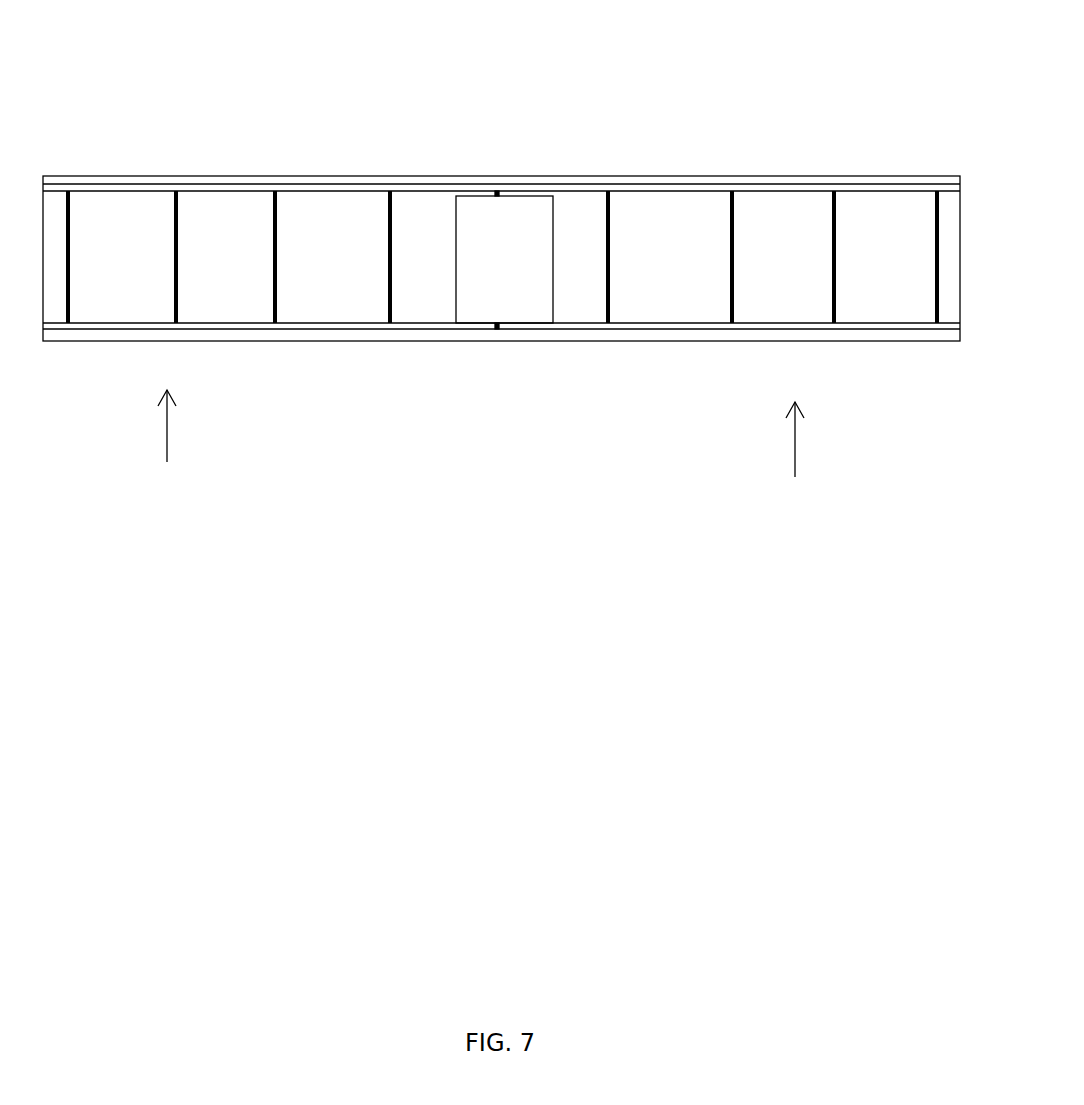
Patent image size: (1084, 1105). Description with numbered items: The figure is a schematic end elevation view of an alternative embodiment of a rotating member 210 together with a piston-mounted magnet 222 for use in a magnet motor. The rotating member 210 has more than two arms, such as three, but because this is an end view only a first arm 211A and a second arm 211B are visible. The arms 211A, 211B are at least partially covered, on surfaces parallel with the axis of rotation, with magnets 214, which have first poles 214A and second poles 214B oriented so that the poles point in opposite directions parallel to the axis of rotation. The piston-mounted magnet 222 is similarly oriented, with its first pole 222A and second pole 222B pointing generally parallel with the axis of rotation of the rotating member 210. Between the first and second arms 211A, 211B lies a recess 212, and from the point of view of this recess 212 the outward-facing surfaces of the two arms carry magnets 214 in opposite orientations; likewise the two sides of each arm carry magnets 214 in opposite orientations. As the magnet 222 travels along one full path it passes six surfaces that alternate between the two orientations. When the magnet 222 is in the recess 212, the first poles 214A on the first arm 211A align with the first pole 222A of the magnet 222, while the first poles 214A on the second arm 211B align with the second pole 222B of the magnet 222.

The rotating member 210 is at (417, 180).
The recess 212 is at (430, 288).
The magnets 214 is at (94, 273).
The first poles 214A is at (327, 202).
The second poles 214B is at (887, 201).
The piston-mounted magnet 222 is at (537, 245).
The first pole 222A is at (510, 204).
The second pole 222B is at (505, 312).
The first arm 211A is at (171, 441).
The second arm 211B is at (783, 459).